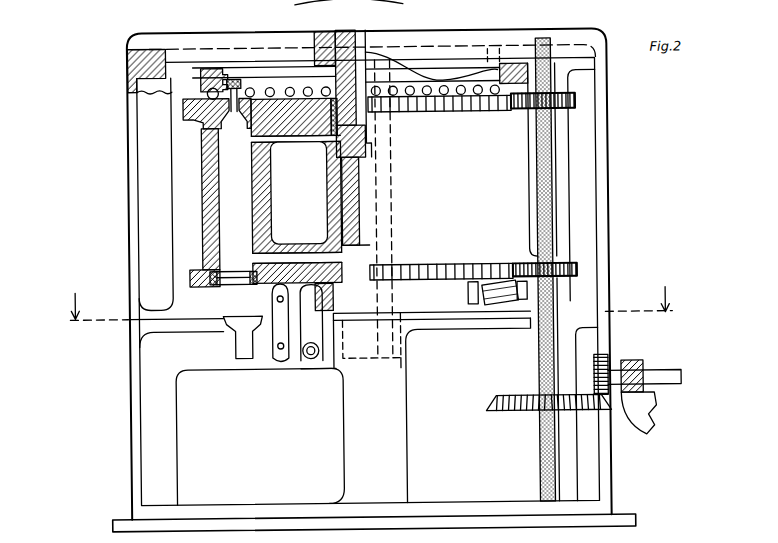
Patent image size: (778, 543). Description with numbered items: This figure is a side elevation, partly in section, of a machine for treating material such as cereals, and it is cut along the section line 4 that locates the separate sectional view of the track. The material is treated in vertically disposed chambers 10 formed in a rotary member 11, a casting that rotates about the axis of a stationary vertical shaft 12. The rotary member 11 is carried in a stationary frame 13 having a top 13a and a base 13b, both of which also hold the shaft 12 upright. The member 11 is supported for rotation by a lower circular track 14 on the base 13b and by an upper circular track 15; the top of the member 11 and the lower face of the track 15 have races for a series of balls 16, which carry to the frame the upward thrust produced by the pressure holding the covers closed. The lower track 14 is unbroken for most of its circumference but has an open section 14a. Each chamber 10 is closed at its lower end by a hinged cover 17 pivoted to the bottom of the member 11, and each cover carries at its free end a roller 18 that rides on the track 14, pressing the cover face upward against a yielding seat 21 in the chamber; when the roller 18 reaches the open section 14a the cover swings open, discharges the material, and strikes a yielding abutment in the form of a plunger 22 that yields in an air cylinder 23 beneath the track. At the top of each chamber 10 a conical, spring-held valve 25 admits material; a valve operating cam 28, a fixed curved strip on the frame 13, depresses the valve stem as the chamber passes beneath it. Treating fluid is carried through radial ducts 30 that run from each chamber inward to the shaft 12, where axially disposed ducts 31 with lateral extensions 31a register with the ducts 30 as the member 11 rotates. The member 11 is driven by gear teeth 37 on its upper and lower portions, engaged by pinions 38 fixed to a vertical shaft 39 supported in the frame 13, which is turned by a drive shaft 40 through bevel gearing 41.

The section line 4— 4 is at (369, 306).
The chamber 10 is at (232, 160).
The rotary member 11 is at (212, 215).
The stationary vertical shaft 12 is at (330, 34).
The stationary frame 13 is at (133, 118).
The top 13a is at (128, 52).
The base 13b is at (150, 404).
The lower circular track 14 is at (437, 322).
The open section 14a is at (262, 326).
The upper circular track 15 is at (212, 66).
The balls 16 is at (209, 91).
The hinged cover 17 is at (300, 320).
The roller 18 is at (498, 304).
The yielding seat 21 is at (214, 284).
The plunger 22 is at (303, 368).
The air cylinder 23 is at (325, 370).
The valve 25 is at (236, 112).
The valve operating cam 28 is at (440, 80).
The radial ducts 30 is at (309, 136).
The axially disposed ducts 31 is at (364, 118).
The lateral extensions 31a is at (352, 143).
The gear teeth 37 is at (470, 110).
The pinions 38 is at (578, 99).
The vertical shaft 39 is at (546, 198).
The drive shaft 40 is at (655, 377).
The bevel gearing 41 is at (530, 414).